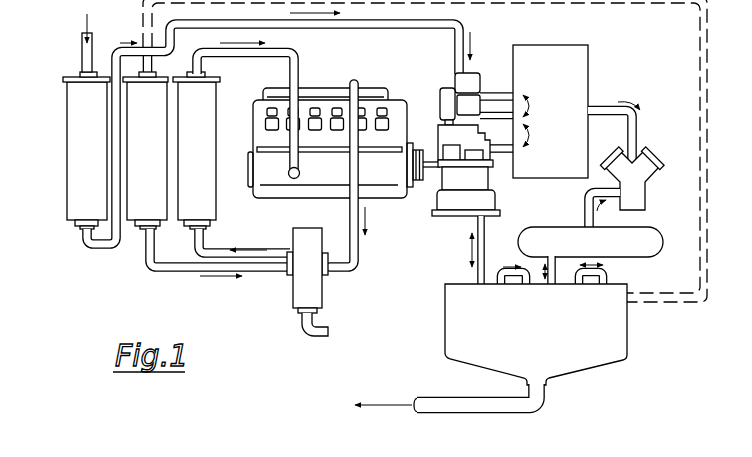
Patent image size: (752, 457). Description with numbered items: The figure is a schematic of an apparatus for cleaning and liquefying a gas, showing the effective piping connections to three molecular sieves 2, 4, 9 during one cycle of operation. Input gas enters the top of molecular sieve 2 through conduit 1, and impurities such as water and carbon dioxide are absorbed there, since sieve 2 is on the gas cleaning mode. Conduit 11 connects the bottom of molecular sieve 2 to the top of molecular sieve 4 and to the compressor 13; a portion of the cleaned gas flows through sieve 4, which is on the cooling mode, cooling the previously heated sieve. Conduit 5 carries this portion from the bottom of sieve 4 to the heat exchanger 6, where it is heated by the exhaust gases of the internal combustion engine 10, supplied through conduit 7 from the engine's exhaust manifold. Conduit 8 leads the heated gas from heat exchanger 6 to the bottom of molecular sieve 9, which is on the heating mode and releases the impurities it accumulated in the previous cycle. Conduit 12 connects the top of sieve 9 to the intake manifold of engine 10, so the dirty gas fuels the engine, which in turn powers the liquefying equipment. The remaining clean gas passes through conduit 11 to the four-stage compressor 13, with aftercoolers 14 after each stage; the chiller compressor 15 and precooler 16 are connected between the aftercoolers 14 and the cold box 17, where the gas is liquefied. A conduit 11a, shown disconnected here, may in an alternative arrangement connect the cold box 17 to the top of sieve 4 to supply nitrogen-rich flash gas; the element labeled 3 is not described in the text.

The conduit or manifold 1 is at (83, 60).
The molecular sieve 2 is at (73, 145).
The connecting conduit 3 is at (87, 240).
The molecular sieve 4 is at (138, 208).
The conduit or manifold 5 is at (165, 268).
The heat exchanger 6 is at (302, 288).
The conduit 7 is at (353, 210).
The conduit or manifold 8 is at (275, 257).
The molecular sieve 9 is at (200, 145).
The internal combustion engine 10 is at (396, 108).
The conduit or manifold 11 is at (322, 26).
The conduit 11a is at (703, 40).
The conduit or manifold 12 is at (256, 56).
The compressor 13 is at (454, 100).
The aftercoolers 14 is at (573, 88).
The chiller compressor 15 is at (640, 192).
The precooler 16 is at (650, 240).
The cold box 17 is at (612, 333).